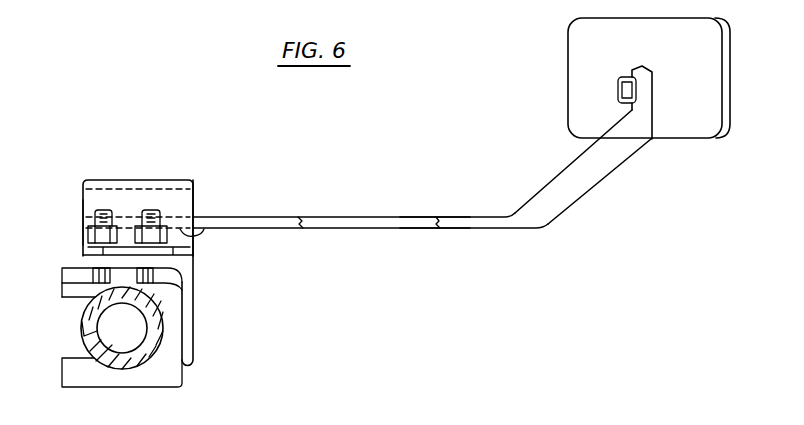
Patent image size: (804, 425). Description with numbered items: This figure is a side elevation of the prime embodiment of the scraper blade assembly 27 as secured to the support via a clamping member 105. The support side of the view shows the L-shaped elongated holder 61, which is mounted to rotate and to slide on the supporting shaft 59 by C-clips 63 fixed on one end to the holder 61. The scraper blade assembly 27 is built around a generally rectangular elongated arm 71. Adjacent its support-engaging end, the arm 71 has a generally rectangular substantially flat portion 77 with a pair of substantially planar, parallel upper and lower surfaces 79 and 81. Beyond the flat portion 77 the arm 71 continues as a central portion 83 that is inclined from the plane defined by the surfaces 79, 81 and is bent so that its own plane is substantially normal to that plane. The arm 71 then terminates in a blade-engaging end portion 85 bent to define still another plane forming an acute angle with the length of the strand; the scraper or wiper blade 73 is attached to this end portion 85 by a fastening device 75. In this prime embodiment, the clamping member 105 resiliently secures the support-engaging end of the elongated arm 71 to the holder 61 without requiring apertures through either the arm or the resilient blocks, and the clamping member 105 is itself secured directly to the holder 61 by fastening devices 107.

The scraper blade assembly 27 is at (360, 246).
The supporting shaft 59 is at (82, 332).
The holder 61 is at (194, 325).
The C-clips 63 is at (167, 375).
The elongated arm 71 is at (333, 212).
The scraper blade 73 is at (704, 52).
The fastening device 75 is at (618, 89).
The flat portion 77 is at (434, 214).
The upper surface 79 is at (88, 212).
The lower surface 81 is at (200, 218).
The central portion 83 is at (553, 177).
The blade-engaging end portion 85 is at (652, 95).
The clamping member 105 is at (163, 179).
The fastening devices 107 is at (62, 291).